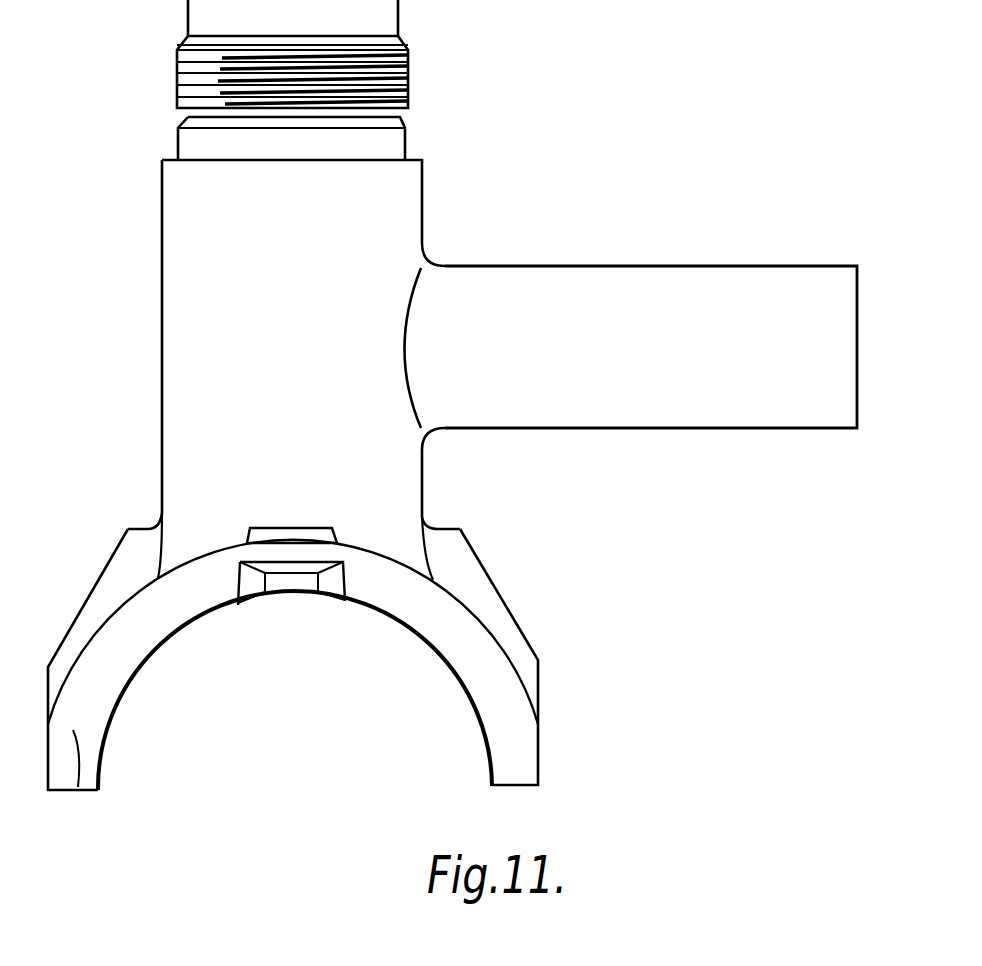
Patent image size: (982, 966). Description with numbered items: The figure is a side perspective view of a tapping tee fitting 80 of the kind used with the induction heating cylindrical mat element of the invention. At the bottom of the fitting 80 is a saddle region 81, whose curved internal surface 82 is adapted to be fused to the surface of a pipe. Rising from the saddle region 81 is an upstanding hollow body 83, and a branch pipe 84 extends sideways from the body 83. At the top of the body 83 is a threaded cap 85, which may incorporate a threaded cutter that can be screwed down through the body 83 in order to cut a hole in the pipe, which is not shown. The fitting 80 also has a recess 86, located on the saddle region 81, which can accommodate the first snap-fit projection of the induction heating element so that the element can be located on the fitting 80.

The tapping tee fitting 80 is at (145, 194).
The saddle region 81 is at (75, 792).
The internal surface 82 is at (163, 647).
The upstanding hollow body 83 is at (190, 357).
The branch pipe 84 is at (613, 295).
The threaded cap 85 is at (410, 72).
The recess 86 is at (290, 535).